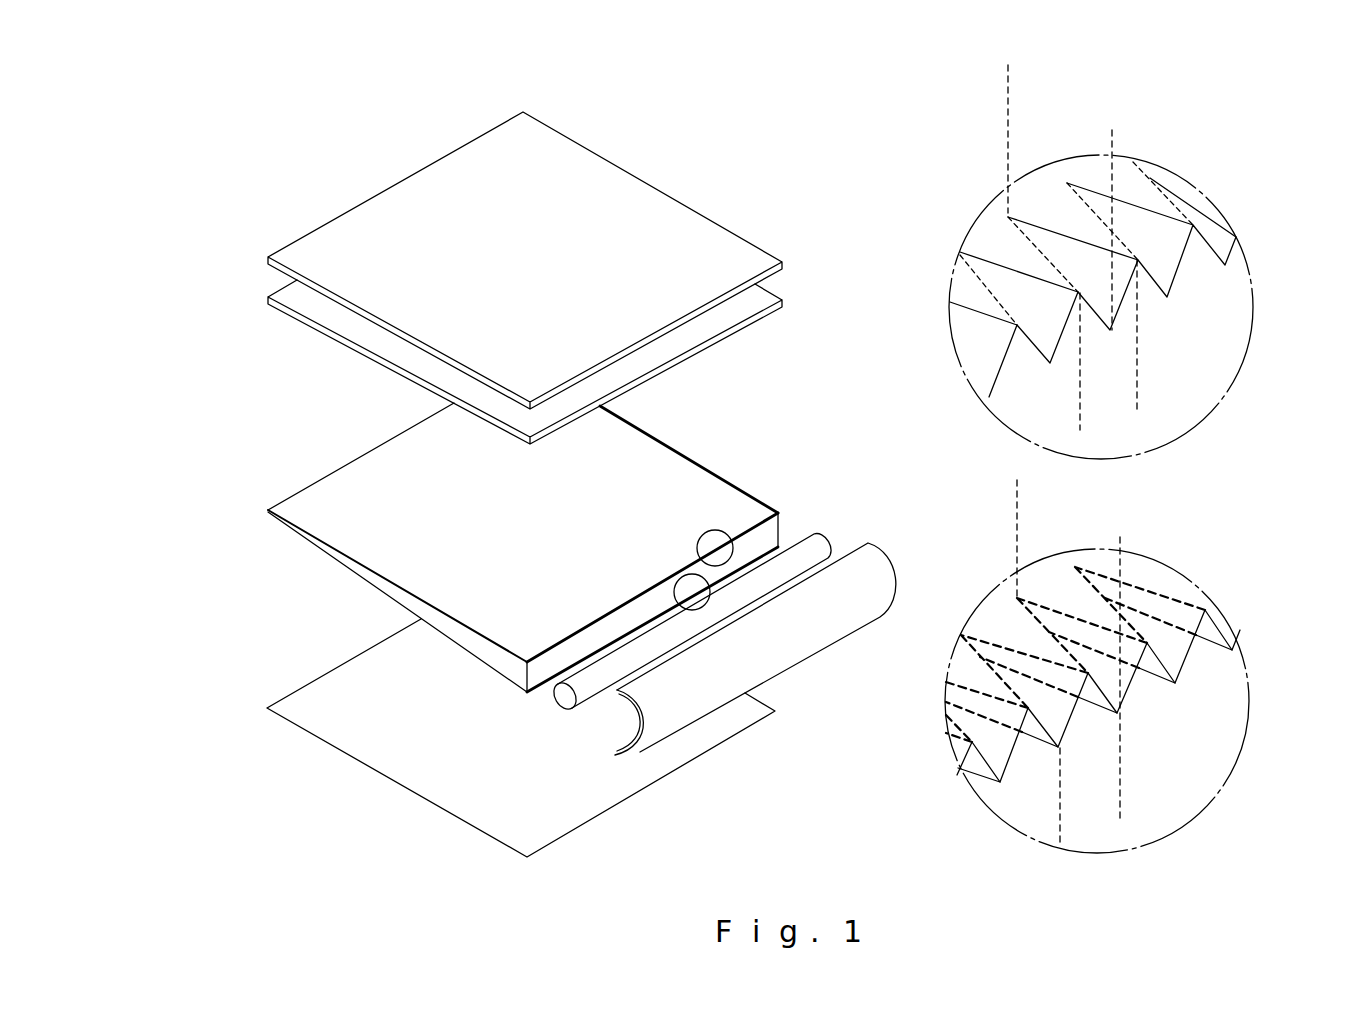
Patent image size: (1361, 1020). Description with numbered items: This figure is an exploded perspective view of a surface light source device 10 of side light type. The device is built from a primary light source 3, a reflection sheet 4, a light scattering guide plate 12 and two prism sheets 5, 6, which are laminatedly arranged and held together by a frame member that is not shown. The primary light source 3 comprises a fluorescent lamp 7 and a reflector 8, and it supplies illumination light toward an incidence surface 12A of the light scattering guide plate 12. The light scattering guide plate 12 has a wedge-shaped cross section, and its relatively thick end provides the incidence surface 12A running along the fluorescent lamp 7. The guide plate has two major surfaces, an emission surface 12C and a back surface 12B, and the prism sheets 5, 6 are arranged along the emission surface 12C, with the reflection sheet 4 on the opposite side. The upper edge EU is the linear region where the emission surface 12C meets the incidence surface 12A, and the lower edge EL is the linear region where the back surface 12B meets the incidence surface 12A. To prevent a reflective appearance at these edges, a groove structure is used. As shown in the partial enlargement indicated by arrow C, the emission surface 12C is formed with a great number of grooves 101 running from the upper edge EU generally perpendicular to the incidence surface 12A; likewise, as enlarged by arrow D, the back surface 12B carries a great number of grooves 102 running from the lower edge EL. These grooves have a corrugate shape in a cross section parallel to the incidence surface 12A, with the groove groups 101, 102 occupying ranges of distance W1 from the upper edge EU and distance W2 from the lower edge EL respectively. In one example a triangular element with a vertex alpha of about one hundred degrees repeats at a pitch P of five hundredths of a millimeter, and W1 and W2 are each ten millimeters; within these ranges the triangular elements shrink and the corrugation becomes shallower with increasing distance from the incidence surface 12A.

The surface light source device 10 is at (247, 178).
The prism sheet 6 is at (738, 248).
The prism sheet 5 is at (765, 297).
The light scattering guide plate 12 is at (523, 543).
The incidence surface 12A is at (773, 537).
The back surface 12B is at (332, 593).
The emission surface 12C is at (687, 487).
The upper edge EU is at (587, 628).
The lower edge EL is at (647, 620).
The fluorescent lamp 7 is at (597, 683).
The primary light source 3 is at (570, 726).
The reflector 8 is at (617, 742).
The reflection sheet 4 is at (570, 822).
The grooves 101 is at (1142, 262).
The grooves 102 is at (1136, 666).
The arrow C is at (727, 533).
The arrow D is at (707, 597).
The distance W1 is at (1010, 83).
The distance W2 is at (1018, 482).
The repeating pitch P is at (1158, 375).
The vertex alpha is at (1040, 370).